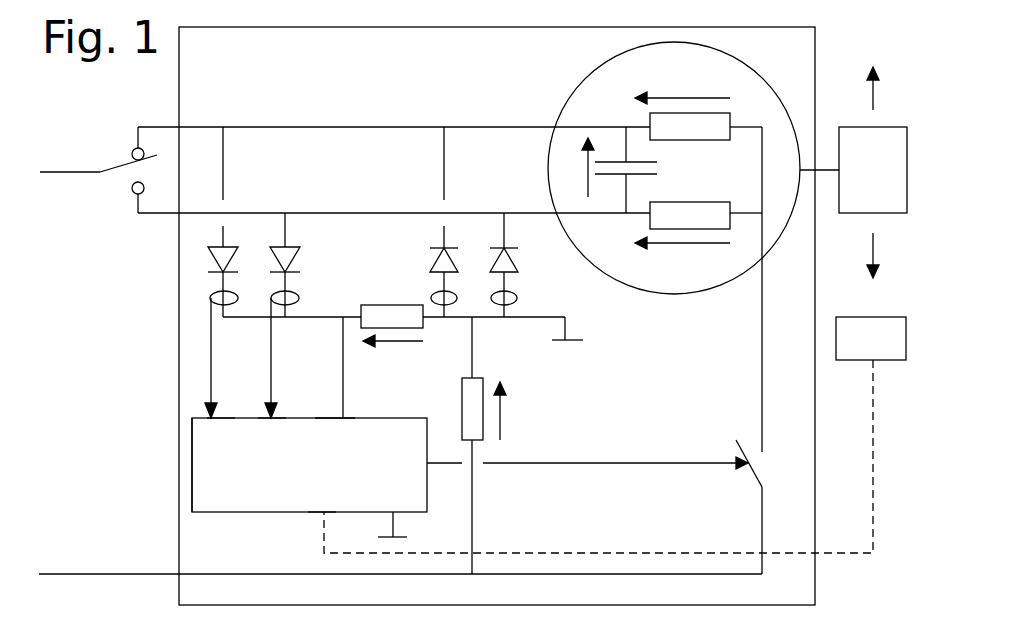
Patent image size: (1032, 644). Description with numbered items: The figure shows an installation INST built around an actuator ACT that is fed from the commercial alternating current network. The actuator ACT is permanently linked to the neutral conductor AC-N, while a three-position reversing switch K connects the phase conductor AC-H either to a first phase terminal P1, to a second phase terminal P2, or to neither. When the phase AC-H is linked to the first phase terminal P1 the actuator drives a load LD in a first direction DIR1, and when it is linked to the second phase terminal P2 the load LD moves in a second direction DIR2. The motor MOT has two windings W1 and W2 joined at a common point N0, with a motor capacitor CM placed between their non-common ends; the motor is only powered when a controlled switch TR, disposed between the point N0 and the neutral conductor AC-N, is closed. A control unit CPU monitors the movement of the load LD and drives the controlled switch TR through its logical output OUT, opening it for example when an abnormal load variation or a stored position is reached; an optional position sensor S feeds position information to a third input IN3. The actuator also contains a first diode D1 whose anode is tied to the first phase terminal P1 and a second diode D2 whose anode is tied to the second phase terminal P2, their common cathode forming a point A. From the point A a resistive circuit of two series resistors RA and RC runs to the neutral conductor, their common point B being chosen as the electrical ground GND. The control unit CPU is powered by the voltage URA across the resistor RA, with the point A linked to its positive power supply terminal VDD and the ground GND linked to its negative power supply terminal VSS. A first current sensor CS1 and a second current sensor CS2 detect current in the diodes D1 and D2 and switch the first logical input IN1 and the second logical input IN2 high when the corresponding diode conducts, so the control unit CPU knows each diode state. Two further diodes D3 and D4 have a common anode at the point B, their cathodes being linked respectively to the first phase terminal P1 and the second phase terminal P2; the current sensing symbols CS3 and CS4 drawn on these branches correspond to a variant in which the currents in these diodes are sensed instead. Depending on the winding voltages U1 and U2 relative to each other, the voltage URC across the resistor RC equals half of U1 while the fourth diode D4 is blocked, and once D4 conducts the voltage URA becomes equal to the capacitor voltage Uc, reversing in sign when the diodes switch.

The actuator ACT is at (497, 316).
The phase conductor of the network AC-H is at (70, 161).
The neutral conductor of the network AC-N is at (400, 563).
The reversing switch K is at (134, 171).
The first phase terminal P1 is at (385, 125).
The second phase terminal P2 is at (385, 218).
The first diode D1 is at (212, 222).
The second diode D2 is at (300, 265).
The third diode D3 is at (429, 222).
The fourth diode D4 is at (520, 265).
The first current sensor CS1 is at (226, 354).
The second current sensor CS2 is at (285, 354).
The third current sensor CS3 is at (444, 298).
The fourth current sensor CS4 is at (504, 298).
The common cathode A is at (346, 317).
The common point of the resistors B is at (540, 318).
The resistor RA is at (392, 307).
The voltage URA is at (393, 353).
The resistor RC is at (457, 445).
The voltage URC is at (521, 411).
The electrical ground GND is at (592, 333).
The motor MOT is at (573, 90).
The first winding W1 is at (706, 142).
The second winding W2 is at (706, 204).
The motor capacitor CM is at (642, 170).
The voltage at the terminals of the capacitor Uc is at (575, 167).
The voltage U1 is at (682, 89).
The voltage U2 is at (682, 255).
The point common to both windings N0 is at (745, 289).
The load LD is at (853, 170).
The first direction DIR1 is at (873, 76).
The second direction DIR2 is at (873, 270).
The load position sensor S is at (615, 435).
The control unit CPU is at (309, 465).
The first logical input IN1 is at (221, 432).
The second logical input IN2 is at (272, 432).
The third input IN3 is at (322, 501).
The positive power supply terminal VDD is at (335, 432).
The negative power supply terminal VSS is at (390, 513).
The logical output OUT is at (565, 462).
The installation INST is at (155, 433).
The controlled switch TR is at (734, 498).